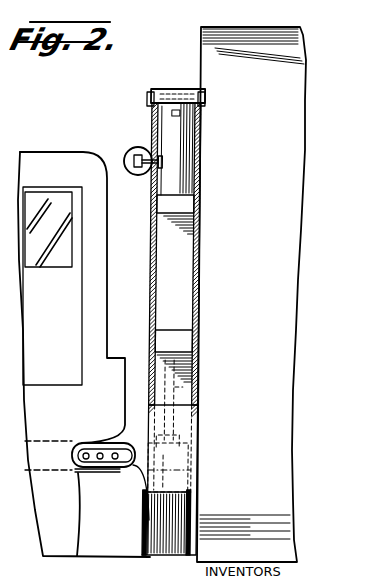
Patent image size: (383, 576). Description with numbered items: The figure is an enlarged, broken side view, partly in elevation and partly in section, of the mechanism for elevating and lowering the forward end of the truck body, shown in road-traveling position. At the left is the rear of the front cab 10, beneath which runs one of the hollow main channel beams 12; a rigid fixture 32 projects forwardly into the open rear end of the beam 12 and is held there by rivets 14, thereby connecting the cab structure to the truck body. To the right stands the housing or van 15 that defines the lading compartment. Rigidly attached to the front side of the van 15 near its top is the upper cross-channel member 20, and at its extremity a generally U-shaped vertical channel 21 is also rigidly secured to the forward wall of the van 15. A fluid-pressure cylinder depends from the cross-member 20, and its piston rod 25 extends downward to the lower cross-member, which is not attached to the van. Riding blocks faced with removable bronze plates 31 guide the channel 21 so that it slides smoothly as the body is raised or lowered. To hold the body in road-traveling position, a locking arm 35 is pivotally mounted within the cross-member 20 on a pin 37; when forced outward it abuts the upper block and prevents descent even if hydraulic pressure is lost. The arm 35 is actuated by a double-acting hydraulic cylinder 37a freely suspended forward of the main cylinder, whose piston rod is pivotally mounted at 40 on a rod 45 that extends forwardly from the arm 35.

The front cab 10 is at (75, 152).
The main channel beams 12 is at (56, 440).
The rivets 14 is at (112, 464).
The housing or van 15 is at (256, 30).
The upper cross-channel member 20 is at (183, 310).
The vertical channel 21 is at (198, 296).
The piston rod 25 is at (197, 383).
The bronze plates 31 is at (187, 208).
The fixture 32 is at (140, 478).
The locking arm 35 is at (178, 142).
The pin 37 is at (200, 95).
The cylinder 37a is at (141, 148).
The pivot 40 is at (125, 158).
The rod 45 is at (155, 169).